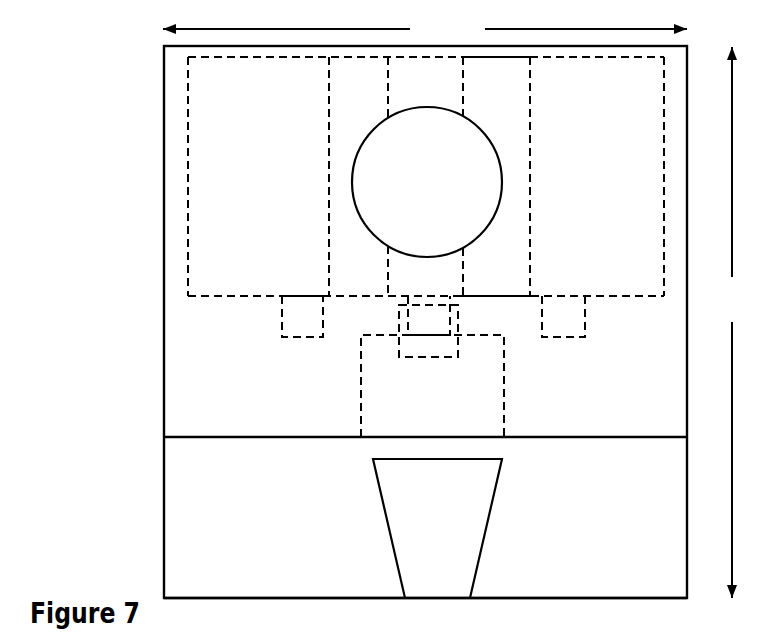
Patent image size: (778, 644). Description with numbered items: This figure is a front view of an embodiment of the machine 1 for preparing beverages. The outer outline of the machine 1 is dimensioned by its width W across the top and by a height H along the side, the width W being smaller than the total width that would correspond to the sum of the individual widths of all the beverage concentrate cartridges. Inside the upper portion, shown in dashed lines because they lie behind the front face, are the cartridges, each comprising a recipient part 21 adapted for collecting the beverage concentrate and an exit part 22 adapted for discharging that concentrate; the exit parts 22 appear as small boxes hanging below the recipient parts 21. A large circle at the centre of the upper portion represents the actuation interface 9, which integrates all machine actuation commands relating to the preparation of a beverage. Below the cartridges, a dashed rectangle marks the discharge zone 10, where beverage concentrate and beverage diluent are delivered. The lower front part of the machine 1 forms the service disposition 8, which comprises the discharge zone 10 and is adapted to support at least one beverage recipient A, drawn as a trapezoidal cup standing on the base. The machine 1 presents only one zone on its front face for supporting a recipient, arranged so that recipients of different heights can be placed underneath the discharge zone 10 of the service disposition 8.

The machine for preparing beverages 1 is at (371, 311).
The service disposition 8 is at (425, 588).
The actuation interface 9 is at (429, 181).
The discharge zone 10 is at (437, 386).
The recipient part 21 is at (426, 176).
The exit part 22 is at (279, 319).
The beverage recipient A is at (437, 528).
The width of the machine W is at (425, 29).
The height H is at (737, 322).